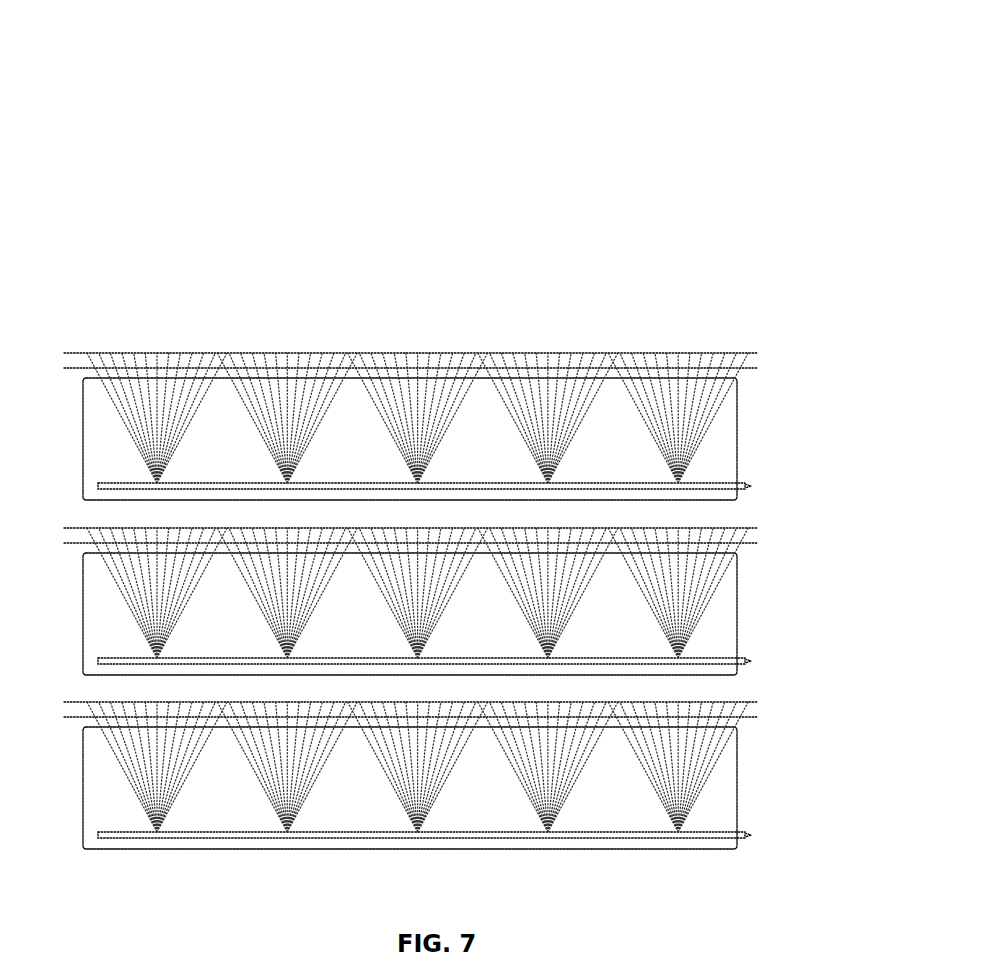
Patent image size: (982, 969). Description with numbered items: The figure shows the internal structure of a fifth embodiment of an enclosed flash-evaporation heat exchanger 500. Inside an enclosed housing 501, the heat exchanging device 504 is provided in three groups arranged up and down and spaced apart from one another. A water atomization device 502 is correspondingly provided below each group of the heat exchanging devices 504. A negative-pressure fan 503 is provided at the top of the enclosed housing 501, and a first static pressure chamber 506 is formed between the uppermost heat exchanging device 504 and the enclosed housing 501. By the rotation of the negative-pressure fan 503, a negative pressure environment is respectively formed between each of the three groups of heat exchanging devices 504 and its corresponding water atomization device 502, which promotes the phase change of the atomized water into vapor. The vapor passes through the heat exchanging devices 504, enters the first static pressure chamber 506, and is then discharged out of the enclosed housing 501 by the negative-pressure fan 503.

The cleaning apparatus 500 is at (106, 32).
The enclosed housing 501 is at (110, 248).
The water atomization device 502 is at (683, 468).
The negative-pressure fan 503 is at (527, 192).
The heat exchanging device 504 is at (750, 347).
The first static pressure chamber 506 is at (640, 258).